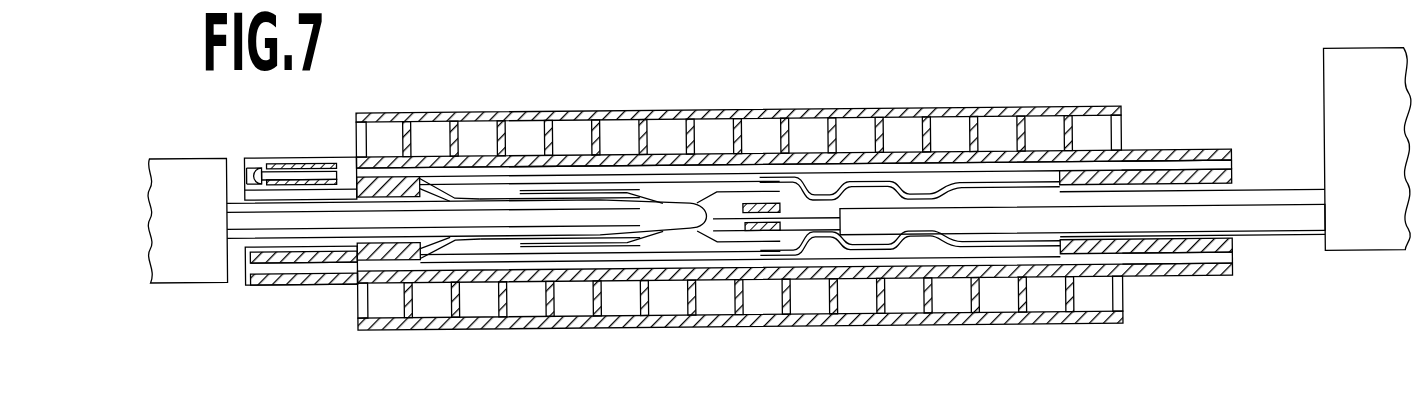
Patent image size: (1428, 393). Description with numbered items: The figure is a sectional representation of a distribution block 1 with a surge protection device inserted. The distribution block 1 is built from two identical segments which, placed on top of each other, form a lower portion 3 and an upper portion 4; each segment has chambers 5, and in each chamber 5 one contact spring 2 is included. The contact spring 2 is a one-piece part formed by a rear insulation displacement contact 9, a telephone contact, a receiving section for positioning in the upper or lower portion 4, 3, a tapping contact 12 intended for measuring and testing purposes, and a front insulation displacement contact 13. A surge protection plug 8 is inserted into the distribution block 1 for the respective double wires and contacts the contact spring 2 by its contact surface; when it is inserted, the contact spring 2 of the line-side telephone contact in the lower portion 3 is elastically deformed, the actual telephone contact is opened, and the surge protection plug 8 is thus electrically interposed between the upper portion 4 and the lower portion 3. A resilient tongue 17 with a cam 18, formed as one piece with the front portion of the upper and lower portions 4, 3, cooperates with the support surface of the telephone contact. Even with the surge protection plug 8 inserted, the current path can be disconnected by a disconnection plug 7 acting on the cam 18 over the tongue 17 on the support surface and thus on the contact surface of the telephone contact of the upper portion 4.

The distribution block 1 is at (970, 86).
The contact spring 2 is at (801, 180).
The lower portion 3 is at (1066, 323).
The upper portion 4 is at (1068, 108).
The chamber 5 is at (906, 187).
The disconnection plug 7 is at (196, 161).
The surge protection plug 8 is at (1372, 68).
The rear insulation displacement contact 9 is at (1157, 258).
The tapping contact 12 is at (483, 246).
The front insulation displacement contact 13 is at (314, 271).
The tongue 17 is at (568, 248).
The cam 18 is at (668, 240).